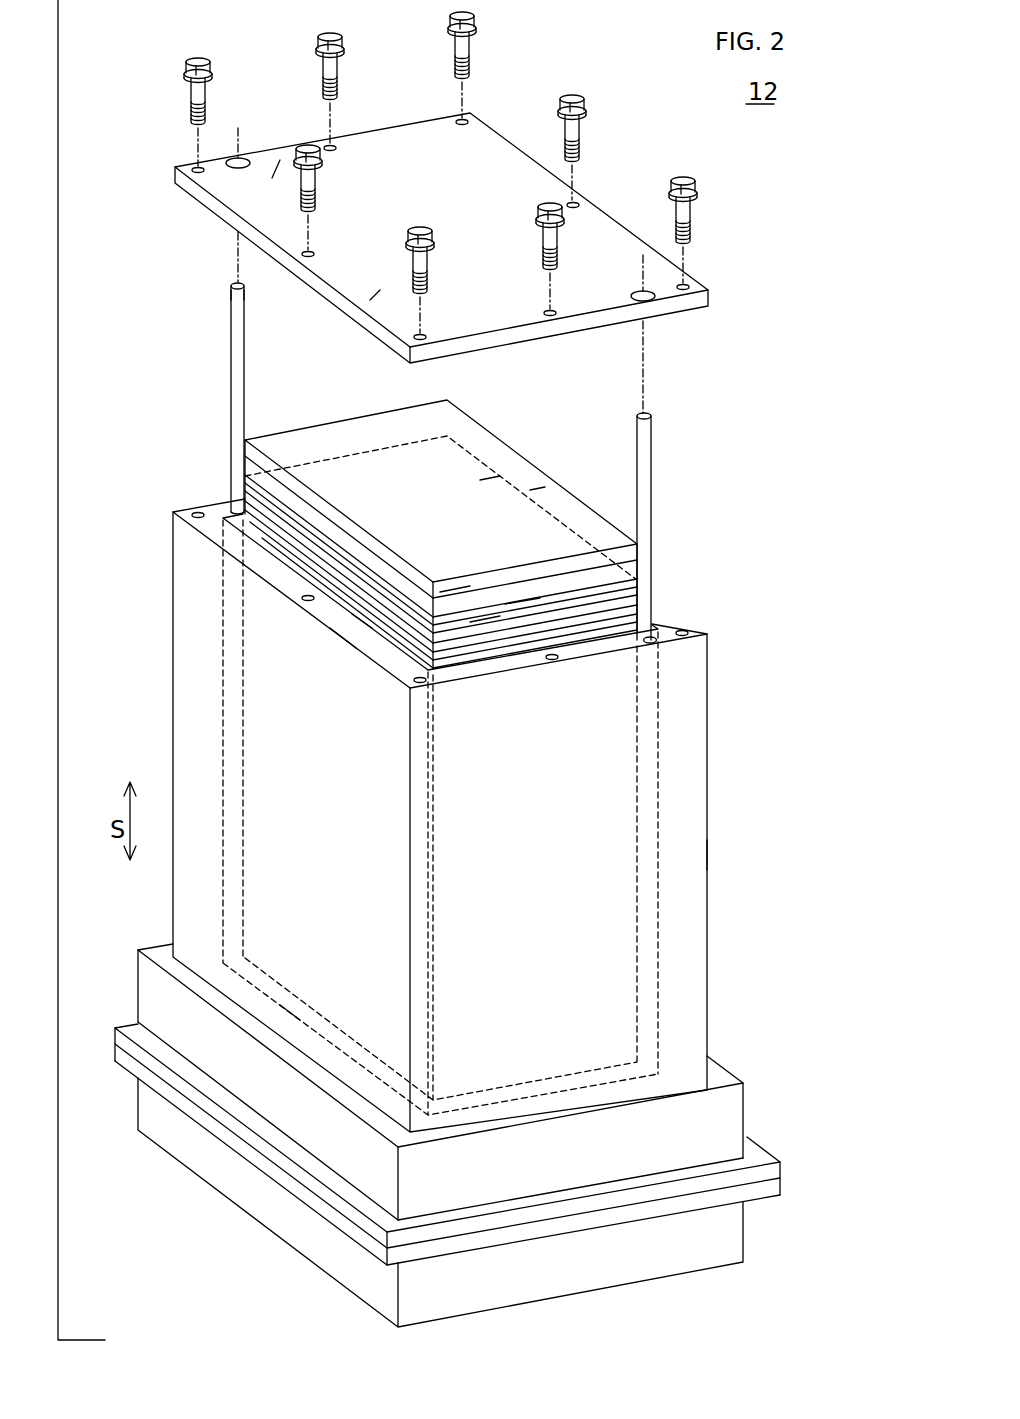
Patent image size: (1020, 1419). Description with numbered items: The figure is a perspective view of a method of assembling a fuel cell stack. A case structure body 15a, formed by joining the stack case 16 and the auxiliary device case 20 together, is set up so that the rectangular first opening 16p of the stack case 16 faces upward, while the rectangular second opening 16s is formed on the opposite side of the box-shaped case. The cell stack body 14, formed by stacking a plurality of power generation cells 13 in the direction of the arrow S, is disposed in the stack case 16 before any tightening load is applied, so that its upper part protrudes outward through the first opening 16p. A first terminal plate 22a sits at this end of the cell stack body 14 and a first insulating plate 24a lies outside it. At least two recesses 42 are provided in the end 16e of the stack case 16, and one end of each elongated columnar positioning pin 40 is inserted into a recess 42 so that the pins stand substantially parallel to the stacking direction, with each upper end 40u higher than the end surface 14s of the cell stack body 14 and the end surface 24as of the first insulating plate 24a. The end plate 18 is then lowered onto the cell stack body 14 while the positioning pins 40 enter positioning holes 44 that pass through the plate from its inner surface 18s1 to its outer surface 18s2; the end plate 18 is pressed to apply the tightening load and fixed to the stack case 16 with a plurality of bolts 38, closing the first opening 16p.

The power generation cells 13 is at (473, 644).
The cell stack body 14 is at (292, 498).
The end surface of the cell stack body 14s is at (490, 496).
The case structure body 15a is at (738, 856).
The stack case 16 is at (440, 815).
The end of the stack case 16e is at (342, 618).
The first opening 16p is at (364, 616).
The second opening 16s is at (290, 1012).
The end plate 18 is at (492, 158).
The inner surface of the end plate 18s1 is at (377, 278).
The outer surface of the end plate 18s2 is at (274, 176).
The auxiliary device case 20 is at (742, 1082).
The first terminal plate 22a is at (520, 602).
The first insulating plate 24a is at (457, 590).
The end surface of the first insulating plate 24as is at (536, 488).
The bolts 38 is at (196, 60).
The positioning pins 40 is at (230, 356).
The upper end of the positioning pin 40u is at (234, 286).
The recesses 42 is at (232, 510).
The positioning holes 44 is at (242, 158).